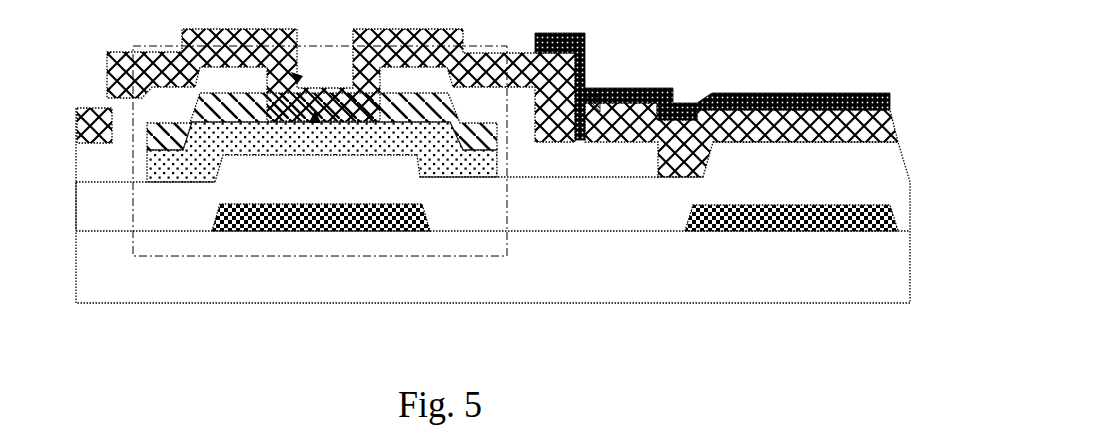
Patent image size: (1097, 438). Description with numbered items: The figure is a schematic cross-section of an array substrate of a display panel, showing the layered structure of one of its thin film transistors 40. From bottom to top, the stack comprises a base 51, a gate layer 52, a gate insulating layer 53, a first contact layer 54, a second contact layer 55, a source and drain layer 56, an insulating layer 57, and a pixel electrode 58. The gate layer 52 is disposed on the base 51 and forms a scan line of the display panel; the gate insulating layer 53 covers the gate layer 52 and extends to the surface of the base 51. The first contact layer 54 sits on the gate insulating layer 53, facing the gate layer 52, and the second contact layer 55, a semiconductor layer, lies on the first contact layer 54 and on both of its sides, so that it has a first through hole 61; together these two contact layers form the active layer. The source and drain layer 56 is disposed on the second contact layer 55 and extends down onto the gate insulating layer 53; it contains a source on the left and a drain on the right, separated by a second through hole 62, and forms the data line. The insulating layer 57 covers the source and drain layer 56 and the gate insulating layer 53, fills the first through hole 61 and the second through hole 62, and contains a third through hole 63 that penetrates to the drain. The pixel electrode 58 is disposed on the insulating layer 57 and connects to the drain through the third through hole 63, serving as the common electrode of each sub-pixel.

The thin film transistor 40 is at (355, 258).
The base 51 is at (910, 270).
The gate layer 52 is at (897, 222).
The gate insulating layer 53 is at (870, 180).
The first contact layer 54 is at (148, 165).
The second contact layer 55 is at (150, 130).
The source and drain layer 56 is at (180, 105).
The insulating layer 57 is at (870, 127).
The pixel electrode 58 is at (884, 94).
The first through hole 61 is at (315, 120).
The second through hole 62 is at (302, 77).
The third through hole 63 is at (598, 96).